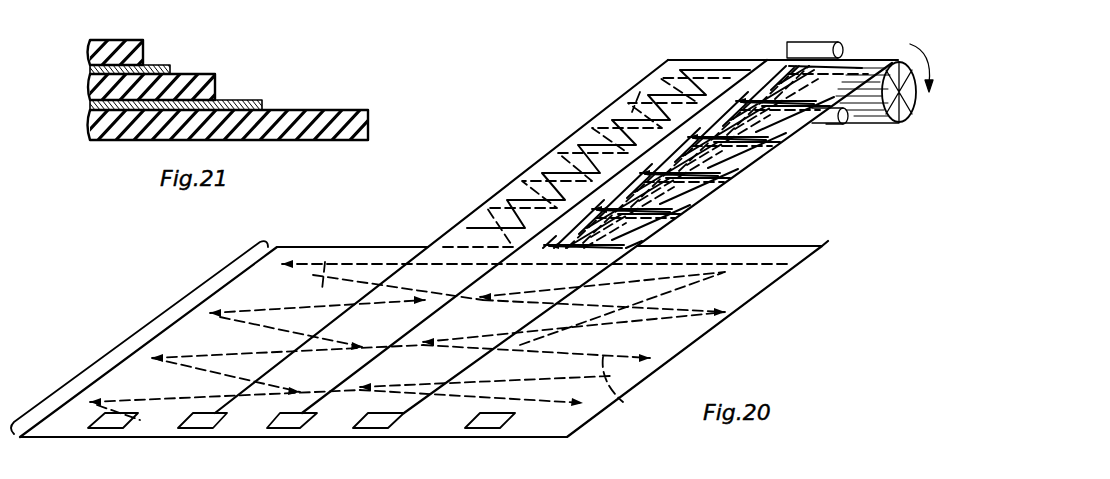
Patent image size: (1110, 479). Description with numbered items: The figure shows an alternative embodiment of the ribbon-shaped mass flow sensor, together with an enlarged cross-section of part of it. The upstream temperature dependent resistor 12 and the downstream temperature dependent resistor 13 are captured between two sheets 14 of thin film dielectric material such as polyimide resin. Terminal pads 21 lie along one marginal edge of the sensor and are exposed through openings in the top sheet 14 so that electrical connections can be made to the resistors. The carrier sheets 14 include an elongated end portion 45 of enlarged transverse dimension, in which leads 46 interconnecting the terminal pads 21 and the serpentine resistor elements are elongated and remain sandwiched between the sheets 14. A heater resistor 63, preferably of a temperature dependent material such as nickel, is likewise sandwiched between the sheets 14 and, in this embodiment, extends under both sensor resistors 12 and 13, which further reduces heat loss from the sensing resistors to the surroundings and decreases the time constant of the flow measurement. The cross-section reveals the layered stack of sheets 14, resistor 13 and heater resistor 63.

In FIG. 20, the upstream temperature dependent resistor 12 is at (522, 200).
In FIG. 21, the downstream temperature dependent resistor 13 is at (168, 65).
In FIG. 20, the downstream temperature dependent resistor 13 is at (681, 182).
In FIG. 21, the sheets of thin film dielectric material 14 is at (127, 40).
In FIG. 20, the sheets of thin film dielectric material 14 is at (142, 388).
In FIG. 20, the terminal pads 21 is at (853, 134).
In FIG. 20, the elongated end portion 45 is at (140, 330).
In FIG. 20, the leads 46 is at (341, 315).
In FIG. 21, the heater resistor 63 is at (257, 100).
In FIG. 20, the heater resistor 63 is at (640, 92).